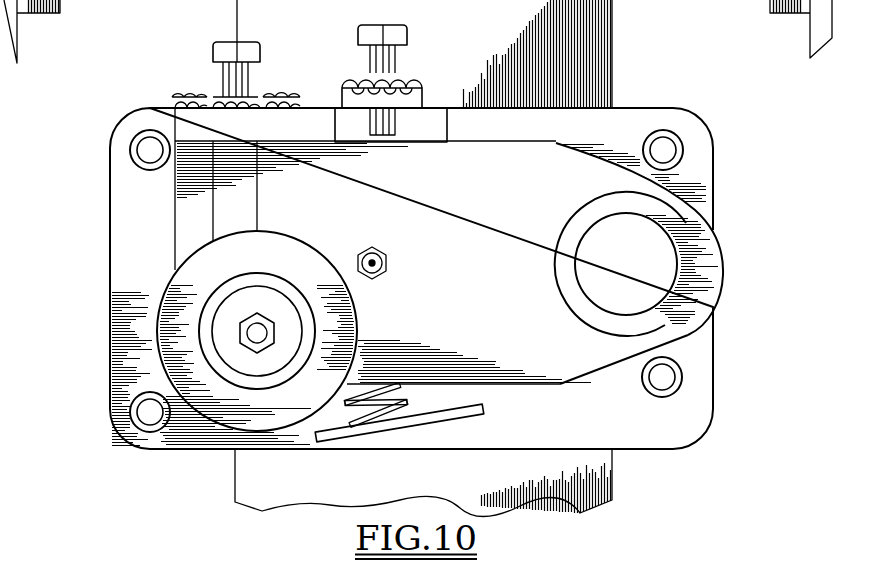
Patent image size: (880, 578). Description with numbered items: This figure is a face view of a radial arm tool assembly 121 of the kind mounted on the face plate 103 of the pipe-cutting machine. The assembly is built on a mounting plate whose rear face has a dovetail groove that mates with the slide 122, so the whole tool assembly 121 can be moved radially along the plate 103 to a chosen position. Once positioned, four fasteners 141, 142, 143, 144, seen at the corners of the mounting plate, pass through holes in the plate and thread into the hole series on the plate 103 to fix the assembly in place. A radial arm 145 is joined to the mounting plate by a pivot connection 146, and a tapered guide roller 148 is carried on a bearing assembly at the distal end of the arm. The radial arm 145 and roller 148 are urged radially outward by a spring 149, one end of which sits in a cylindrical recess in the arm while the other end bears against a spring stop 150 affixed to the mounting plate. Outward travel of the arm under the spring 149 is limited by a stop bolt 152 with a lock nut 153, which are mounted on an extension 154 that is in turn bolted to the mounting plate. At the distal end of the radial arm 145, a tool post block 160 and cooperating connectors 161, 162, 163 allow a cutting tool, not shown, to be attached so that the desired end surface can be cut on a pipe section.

The plate 103 is at (15, 38).
The tool assembly 121 is at (514, 100).
The slide 122 is at (268, 468).
The fastener 141 is at (663, 150).
The fastener 142 is at (662, 377).
The fastener 143 is at (150, 412).
The fastener 144 is at (150, 150).
The radial arm 145 is at (560, 362).
The pivot connection 146 is at (660, 270).
The tapered guide roller 148 is at (288, 253).
The spring 149 is at (404, 395).
The spring stop 150 is at (406, 423).
The stop bolt 152 is at (390, 33).
The lock nut 153 is at (413, 78).
The extension 154 is at (413, 99).
The tool post block 160 is at (207, 123).
The connector 161 is at (197, 88).
The connector 162 is at (280, 88).
The connector 163 is at (235, 44).